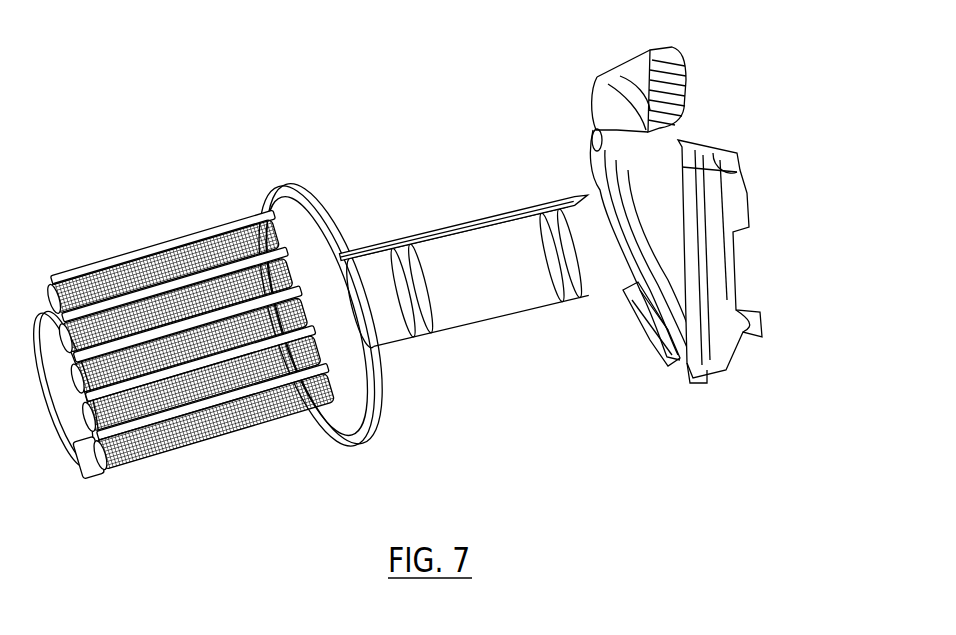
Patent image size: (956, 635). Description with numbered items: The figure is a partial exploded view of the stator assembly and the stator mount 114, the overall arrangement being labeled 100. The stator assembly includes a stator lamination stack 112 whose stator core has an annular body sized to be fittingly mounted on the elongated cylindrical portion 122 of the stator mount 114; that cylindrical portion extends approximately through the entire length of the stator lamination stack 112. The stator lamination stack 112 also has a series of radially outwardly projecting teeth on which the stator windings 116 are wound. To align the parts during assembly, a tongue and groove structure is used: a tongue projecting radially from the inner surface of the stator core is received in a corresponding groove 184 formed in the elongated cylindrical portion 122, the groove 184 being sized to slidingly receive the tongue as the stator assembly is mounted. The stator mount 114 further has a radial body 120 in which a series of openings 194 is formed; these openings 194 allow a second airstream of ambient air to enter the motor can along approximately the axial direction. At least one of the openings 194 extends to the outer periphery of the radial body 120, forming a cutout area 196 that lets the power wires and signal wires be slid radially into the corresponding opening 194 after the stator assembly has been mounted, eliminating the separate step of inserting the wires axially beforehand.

The roller assembly 100 is at (165, 148).
The stator lamination stack 112 is at (207, 405).
The stator mount 114 is at (586, 78).
The stator windings 116 is at (92, 462).
The radial body 120 is at (676, 338).
The elongated cylindrical portion 122 is at (483, 307).
The groove 184 is at (440, 243).
The openings 194 is at (673, 290).
The cutout area 196 is at (701, 112).